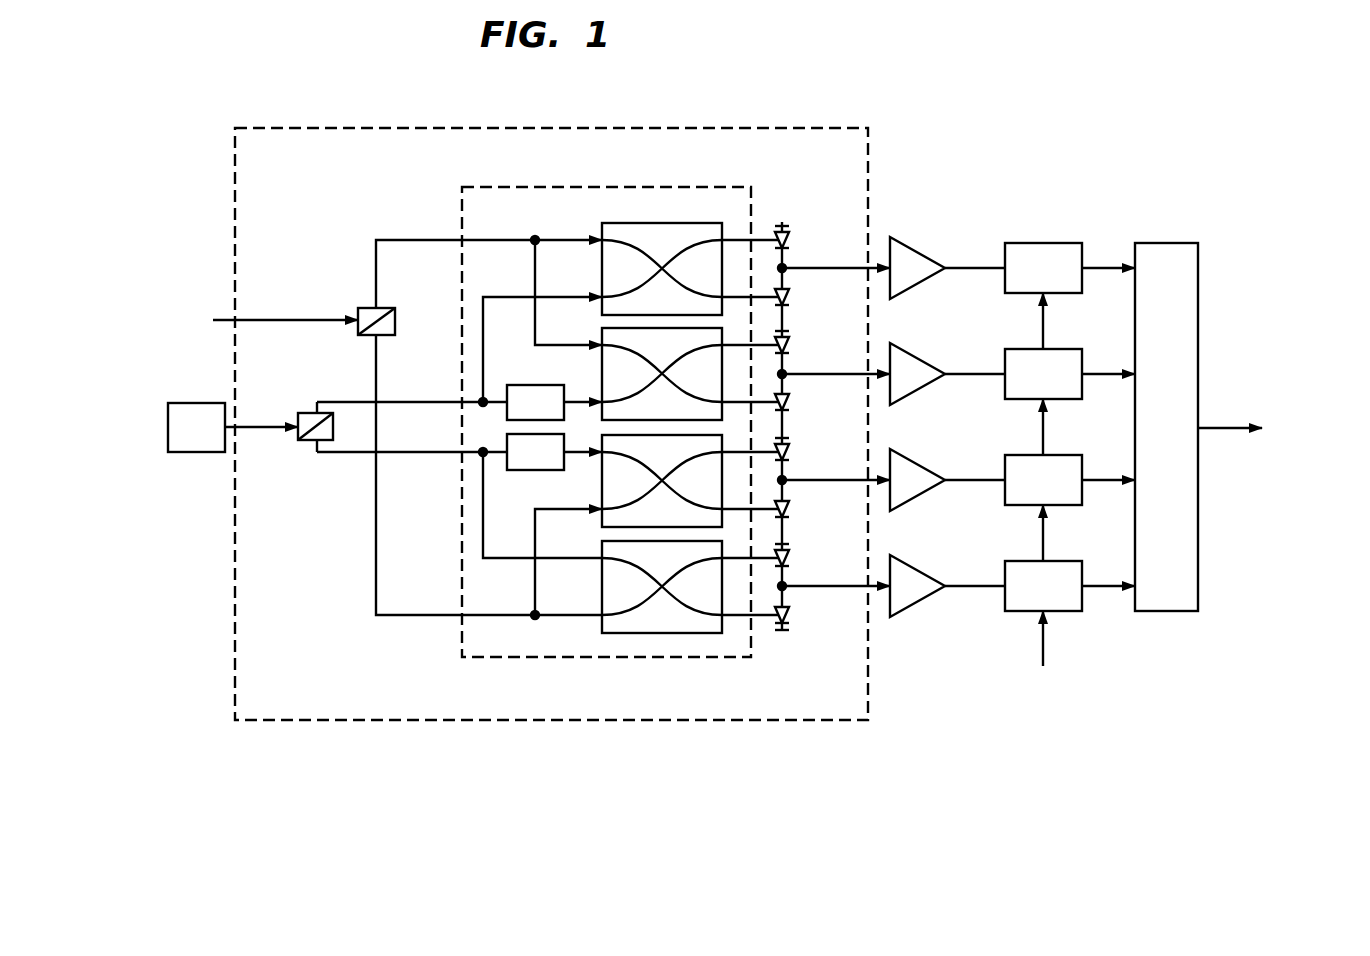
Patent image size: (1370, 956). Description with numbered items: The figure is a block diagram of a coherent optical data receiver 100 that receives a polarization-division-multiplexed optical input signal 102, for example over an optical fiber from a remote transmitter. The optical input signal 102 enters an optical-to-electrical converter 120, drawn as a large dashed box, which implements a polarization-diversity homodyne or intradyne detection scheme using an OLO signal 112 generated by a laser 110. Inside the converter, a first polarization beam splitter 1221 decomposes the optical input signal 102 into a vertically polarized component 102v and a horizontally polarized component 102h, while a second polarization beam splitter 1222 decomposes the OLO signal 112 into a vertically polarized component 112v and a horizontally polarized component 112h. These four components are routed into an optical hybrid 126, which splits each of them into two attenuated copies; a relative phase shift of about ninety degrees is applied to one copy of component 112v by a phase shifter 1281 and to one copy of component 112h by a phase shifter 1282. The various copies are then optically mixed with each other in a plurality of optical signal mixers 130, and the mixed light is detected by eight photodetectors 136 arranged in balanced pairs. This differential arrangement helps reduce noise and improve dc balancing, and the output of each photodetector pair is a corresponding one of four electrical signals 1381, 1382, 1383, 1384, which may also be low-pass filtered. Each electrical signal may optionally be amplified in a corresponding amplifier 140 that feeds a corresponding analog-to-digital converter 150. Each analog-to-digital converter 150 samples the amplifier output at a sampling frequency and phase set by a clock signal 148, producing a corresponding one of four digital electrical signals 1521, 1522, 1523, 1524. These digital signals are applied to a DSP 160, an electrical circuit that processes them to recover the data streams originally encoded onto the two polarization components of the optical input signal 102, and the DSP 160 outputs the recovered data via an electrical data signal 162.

The coherent optical data receiver 100 is at (561, 96).
The optical input signal 102 is at (265, 319).
The vertically polarized component 102v is at (378, 284).
The horizontally polarized component 102h is at (378, 374).
The laser 110 is at (168, 428).
The OLO signal 112 is at (262, 430).
The vertically polarized component 112v is at (438, 404).
The horizontally polarized component 112h is at (420, 455).
The optical-to-electrical converter 120 is at (235, 148).
The polarization beam splitter 1221 is at (356, 336).
The polarization beam splitter 1222 is at (305, 442).
The optical hybrid 126 is at (615, 187).
The phase shifter 1281 is at (516, 385).
The phase shifter 1282 is at (526, 470).
The optical signal mixer 130 is at (682, 249).
The photodetector 136 is at (782, 214).
The electrical signal 1381 is at (828, 264).
The electrical signal 1382 is at (828, 370).
The electrical signal 1383 is at (828, 476).
The electrical signal 1384 is at (828, 582).
The amplifier 140 is at (912, 248).
The clock signal 148 is at (1046, 652).
The analog-to-digital converter 150 is at (1028, 295).
The digital electrical signal 1521 is at (1105, 266).
The digital electrical signal 1522 is at (1105, 372).
The digital electrical signal 1523 is at (1105, 478).
The digital electrical signal 1524 is at (1105, 584).
The DSP 160 is at (1158, 243).
The electrical data signal 162 is at (1232, 426).